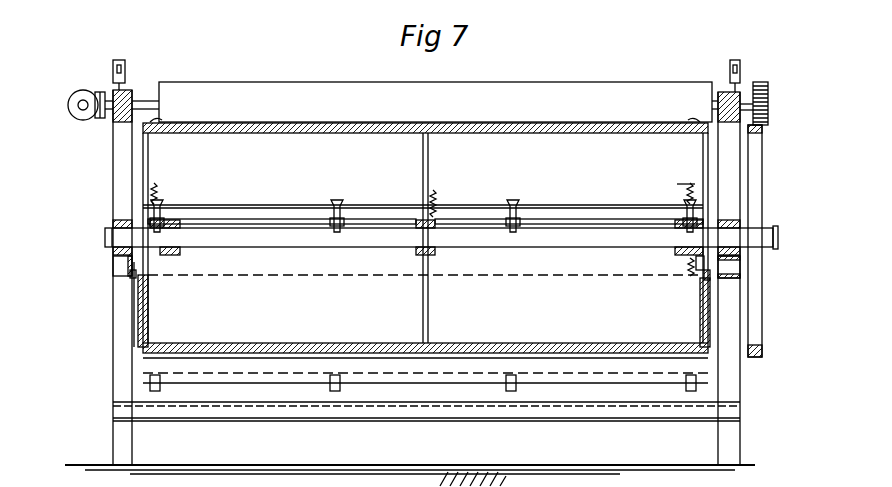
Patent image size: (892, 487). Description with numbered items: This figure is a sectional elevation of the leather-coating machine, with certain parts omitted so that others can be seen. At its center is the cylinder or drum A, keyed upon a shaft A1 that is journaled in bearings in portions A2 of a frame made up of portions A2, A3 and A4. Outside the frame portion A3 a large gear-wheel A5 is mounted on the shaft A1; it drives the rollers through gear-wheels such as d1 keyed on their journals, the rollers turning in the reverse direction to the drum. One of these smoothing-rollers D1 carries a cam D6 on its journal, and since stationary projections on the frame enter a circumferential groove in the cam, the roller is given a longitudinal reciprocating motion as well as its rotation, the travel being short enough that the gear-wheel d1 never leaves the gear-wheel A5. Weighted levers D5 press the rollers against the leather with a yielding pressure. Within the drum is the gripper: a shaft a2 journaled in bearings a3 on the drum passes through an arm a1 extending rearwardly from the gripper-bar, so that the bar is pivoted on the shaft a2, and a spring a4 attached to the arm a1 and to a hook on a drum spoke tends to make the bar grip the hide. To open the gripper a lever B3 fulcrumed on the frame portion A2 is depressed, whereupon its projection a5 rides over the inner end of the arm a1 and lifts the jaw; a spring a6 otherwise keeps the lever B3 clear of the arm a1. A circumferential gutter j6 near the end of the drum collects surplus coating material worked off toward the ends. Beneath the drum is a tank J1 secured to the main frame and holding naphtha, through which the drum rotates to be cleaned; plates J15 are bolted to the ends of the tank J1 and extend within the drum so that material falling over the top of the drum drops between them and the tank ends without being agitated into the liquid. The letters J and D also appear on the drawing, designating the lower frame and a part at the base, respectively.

The roller D1 is at (425, 102).
The cylinder or drum A is at (425, 238).
The circumferential trough or gutter j6 is at (425, 109).
The frame portion A4 is at (110, 190).
The weighted lever D5 is at (113, 68).
The cam D6 is at (82, 121).
The frame portion A3 is at (726, 180).
The gear-wheel d1 is at (768, 104).
The gear-wheel A5 is at (762, 178).
The shaft A1 is at (441, 237).
The shaft a2 is at (377, 238).
The arm a1 is at (150, 218).
The bearings a3 is at (160, 200).
The spring a4 is at (157, 183).
The frame portion A2 is at (113, 265).
The plate J15 is at (148, 305).
The tank J1 is at (134, 330).
The projection a5 is at (690, 261).
The lever B3 is at (688, 269).
The spring a6 is at (696, 282).
The lower frame J is at (410, 422).
The element D is at (523, 480).